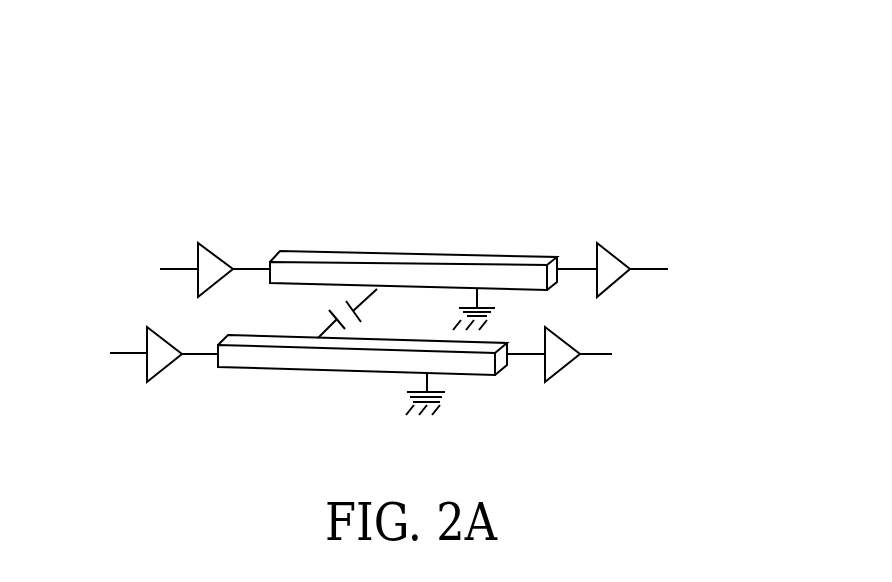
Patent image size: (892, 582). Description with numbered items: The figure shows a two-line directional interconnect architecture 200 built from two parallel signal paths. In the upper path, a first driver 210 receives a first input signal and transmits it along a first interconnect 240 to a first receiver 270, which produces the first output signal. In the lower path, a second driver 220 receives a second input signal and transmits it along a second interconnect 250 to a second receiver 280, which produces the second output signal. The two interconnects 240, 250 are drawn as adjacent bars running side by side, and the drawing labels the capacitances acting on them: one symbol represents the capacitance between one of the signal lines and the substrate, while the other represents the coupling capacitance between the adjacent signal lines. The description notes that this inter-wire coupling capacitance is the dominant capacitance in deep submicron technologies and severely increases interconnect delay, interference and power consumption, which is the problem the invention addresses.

The interconnect architecture 200 is at (393, 152).
The driver 210 is at (216, 256).
The driver 220 is at (162, 338).
The interconnect 240 is at (500, 255).
The interconnect 250 is at (503, 377).
The receiver 270 is at (613, 257).
The receiver 280 is at (561, 372).